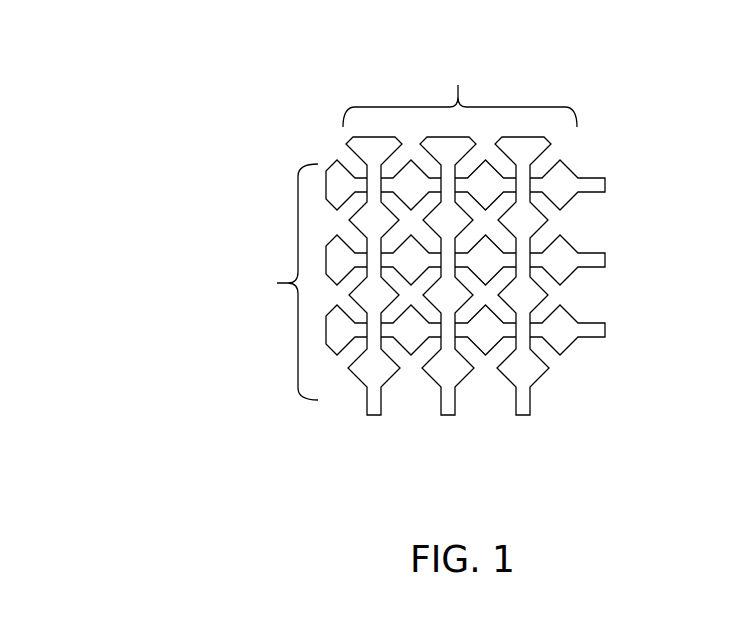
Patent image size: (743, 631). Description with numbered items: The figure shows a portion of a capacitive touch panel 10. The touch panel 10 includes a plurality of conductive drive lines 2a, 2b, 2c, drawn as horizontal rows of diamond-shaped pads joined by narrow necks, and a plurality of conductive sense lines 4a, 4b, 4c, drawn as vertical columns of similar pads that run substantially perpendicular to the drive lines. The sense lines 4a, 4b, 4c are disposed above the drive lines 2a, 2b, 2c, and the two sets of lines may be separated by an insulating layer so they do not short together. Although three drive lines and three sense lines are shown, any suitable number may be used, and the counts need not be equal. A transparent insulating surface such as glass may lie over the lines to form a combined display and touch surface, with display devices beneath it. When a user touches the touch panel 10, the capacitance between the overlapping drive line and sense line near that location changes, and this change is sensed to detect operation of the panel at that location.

The touch panel 10 is at (257, 73).
The conductive drive line 2a is at (605, 170).
The conductive drive line 2b is at (605, 248).
The conductive drive line 2c is at (605, 322).
The conductive sense line 4a is at (380, 415).
The conductive sense line 4b is at (454, 415).
The conductive sense line 4c is at (529, 415).